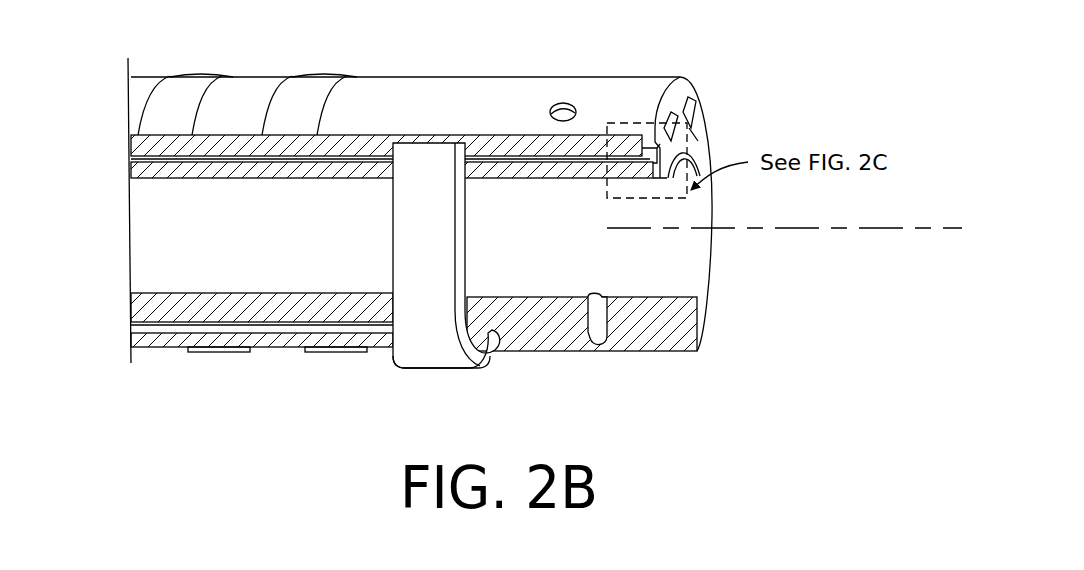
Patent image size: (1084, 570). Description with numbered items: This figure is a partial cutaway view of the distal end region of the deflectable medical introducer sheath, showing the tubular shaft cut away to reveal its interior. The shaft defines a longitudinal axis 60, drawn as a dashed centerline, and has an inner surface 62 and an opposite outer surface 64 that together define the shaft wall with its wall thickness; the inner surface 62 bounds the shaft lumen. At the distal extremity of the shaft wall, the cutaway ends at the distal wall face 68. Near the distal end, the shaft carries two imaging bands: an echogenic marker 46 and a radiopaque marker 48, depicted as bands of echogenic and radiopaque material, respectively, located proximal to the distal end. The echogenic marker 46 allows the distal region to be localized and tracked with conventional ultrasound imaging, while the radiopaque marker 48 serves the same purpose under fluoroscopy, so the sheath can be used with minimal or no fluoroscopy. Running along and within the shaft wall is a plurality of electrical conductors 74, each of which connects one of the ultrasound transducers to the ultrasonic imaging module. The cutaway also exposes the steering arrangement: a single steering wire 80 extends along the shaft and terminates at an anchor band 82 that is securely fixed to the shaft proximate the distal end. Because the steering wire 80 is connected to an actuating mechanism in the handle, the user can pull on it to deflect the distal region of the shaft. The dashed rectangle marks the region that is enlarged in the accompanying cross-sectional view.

The echogenic marker 46 is at (313, 74).
The radiopaque marker 48 is at (202, 75).
The longitudinal axis 60 is at (887, 228).
The inner surface 62 is at (177, 293).
The outer surface 64 is at (493, 138).
The distal wall face 68 is at (697, 341).
The electrical conductors 74 is at (152, 147).
The steering wire 80 is at (215, 328).
The anchor band 82 is at (433, 371).